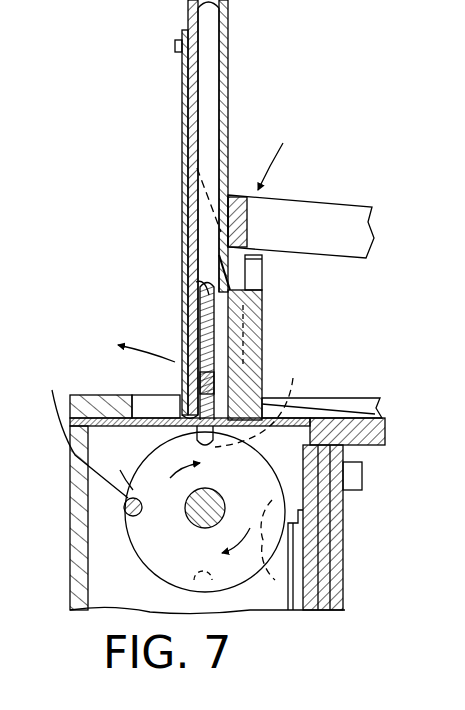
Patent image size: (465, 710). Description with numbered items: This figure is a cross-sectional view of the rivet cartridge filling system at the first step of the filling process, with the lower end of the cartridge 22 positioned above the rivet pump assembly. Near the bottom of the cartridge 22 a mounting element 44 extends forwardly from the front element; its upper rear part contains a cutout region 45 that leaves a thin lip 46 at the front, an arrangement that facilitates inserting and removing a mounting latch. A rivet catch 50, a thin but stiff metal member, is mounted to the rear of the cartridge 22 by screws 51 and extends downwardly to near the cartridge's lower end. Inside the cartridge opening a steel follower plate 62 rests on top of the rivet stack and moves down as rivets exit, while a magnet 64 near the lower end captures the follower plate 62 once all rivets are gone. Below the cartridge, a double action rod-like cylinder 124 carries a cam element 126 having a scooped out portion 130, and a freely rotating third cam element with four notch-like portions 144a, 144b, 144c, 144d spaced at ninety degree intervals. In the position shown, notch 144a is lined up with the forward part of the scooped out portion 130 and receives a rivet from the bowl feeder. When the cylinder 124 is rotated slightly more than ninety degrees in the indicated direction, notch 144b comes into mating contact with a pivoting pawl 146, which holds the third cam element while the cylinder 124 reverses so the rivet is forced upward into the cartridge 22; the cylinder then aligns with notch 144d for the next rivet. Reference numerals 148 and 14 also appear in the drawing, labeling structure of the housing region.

The cartridge 22 is at (230, 55).
The screws 51 is at (175, 45).
The cutout region 45 is at (255, 258).
The lip 46 is at (258, 278).
The mounting element 44 is at (262, 330).
The rivet catch 50 is at (183, 310).
The follower plate 62 is at (205, 278).
The magnet 64 is at (200, 380).
The switch 148 is at (335, 500).
The pivoting pawl 146 is at (318, 540).
The notch-like portion 144a is at (78, 432).
The notch-like portion 144b is at (284, 408).
The notch-like portion 144c is at (274, 556).
The notch-like portion 144d is at (213, 592).
The cylinder 124 is at (195, 520).
The cam element 126 is at (148, 530).
The scooped out portion 130 is at (135, 490).
The housing 14 is at (459, 501).